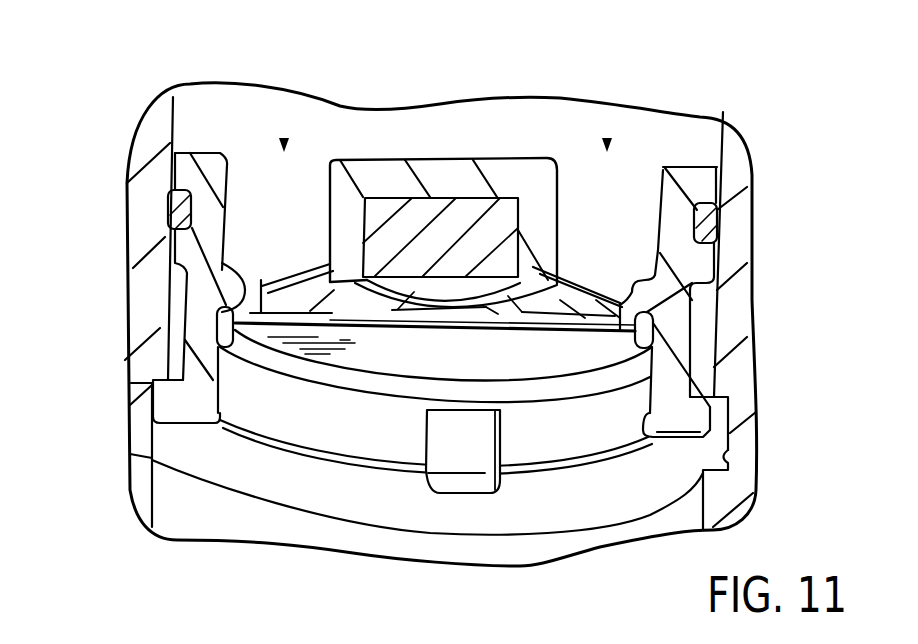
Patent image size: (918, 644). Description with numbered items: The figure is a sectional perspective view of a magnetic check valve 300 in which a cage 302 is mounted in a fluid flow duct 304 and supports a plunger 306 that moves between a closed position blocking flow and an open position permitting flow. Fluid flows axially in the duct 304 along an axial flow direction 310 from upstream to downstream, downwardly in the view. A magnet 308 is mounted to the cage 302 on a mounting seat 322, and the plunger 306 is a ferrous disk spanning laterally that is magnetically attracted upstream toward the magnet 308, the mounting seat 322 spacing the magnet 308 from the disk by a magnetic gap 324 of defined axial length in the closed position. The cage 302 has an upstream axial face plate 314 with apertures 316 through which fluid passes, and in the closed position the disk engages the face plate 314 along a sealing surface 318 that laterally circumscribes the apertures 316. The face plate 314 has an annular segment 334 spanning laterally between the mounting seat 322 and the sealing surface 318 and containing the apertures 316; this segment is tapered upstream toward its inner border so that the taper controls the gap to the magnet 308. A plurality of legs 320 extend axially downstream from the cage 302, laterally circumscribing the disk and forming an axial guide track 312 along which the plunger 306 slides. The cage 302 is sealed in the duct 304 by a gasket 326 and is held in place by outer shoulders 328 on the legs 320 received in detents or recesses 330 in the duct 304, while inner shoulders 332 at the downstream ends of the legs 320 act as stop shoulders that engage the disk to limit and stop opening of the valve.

The magnetic check valve 300 is at (100, 264).
The cage 302 is at (200, 327).
The fluid flow duct 304 is at (176, 120).
The plunger 306 is at (400, 325).
The magnet 308 is at (463, 213).
The axial flow direction 310 is at (653, 63).
The axial guide track 312 is at (235, 378).
The upstream axial face plate 314 is at (230, 280).
The apertures 316 is at (588, 308).
The sealing surface 318 is at (657, 325).
The legs 320 is at (187, 403).
The mounting seat 322 is at (540, 227).
The magnetic gap 324 is at (420, 298).
The gasket 326 is at (707, 225).
The outer shoulders 328 is at (710, 408).
The detents or recesses 330 is at (727, 450).
The inner shoulders 332 is at (675, 420).
The annular segment 334 is at (545, 308).